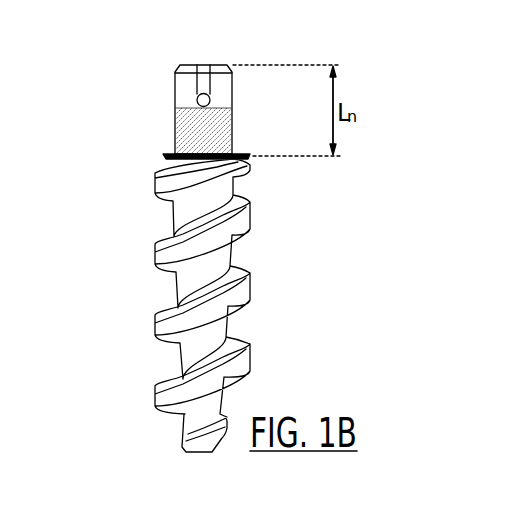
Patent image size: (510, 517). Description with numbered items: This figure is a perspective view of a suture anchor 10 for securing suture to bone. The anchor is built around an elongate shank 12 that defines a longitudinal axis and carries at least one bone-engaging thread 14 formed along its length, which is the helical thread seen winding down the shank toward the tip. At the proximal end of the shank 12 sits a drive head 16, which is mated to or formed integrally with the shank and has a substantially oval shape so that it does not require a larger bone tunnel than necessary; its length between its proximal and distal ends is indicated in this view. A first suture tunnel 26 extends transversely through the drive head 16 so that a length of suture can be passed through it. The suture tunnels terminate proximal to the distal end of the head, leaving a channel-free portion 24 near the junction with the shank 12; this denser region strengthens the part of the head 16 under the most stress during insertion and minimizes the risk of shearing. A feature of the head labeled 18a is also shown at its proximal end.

The suture anchor 10 is at (115, 63).
The elongate shank 12 is at (143, 162).
The bone-engaging thread 14 is at (243, 225).
The drive head 16 is at (175, 110).
The drive slot 18a is at (202, 72).
The channel-free portion 24 is at (214, 138).
The first suture tunnel 26 is at (209, 103).